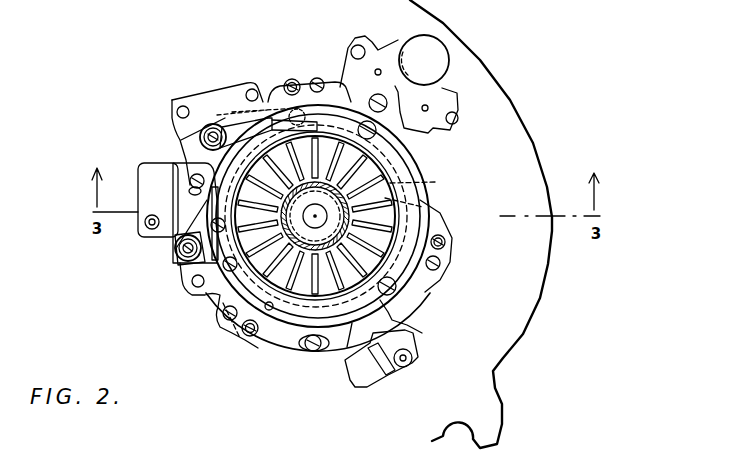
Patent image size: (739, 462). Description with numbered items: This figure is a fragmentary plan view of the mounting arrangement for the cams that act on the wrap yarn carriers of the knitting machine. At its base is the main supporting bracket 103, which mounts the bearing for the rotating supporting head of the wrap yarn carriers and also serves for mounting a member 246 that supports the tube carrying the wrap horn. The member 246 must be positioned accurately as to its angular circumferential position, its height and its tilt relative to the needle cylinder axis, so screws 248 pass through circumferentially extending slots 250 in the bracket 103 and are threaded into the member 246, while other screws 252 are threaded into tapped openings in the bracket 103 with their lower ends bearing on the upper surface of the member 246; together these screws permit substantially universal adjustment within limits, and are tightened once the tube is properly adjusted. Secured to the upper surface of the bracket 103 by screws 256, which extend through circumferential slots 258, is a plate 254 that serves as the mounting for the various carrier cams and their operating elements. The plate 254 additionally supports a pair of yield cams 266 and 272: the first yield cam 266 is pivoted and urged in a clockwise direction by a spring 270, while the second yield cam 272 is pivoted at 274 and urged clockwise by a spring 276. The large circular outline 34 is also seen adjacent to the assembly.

The motor housing boss 34 is at (423, 36).
The main supporting bracket 103 is at (363, 380).
The member 246 is at (420, 184).
The screws 248 is at (300, 80).
The circumferentially extending slots 250 is at (290, 80).
The screws 252 is at (318, 78).
The plate 254 is at (199, 100).
The screws 256 is at (386, 102).
The circumferential slots 258 is at (404, 61).
The yield cam 266 is at (366, 44).
The spring 270 is at (270, 100).
The yield cam 272 is at (213, 213).
The pivot 274 is at (186, 256).
The spring 276 is at (215, 193).